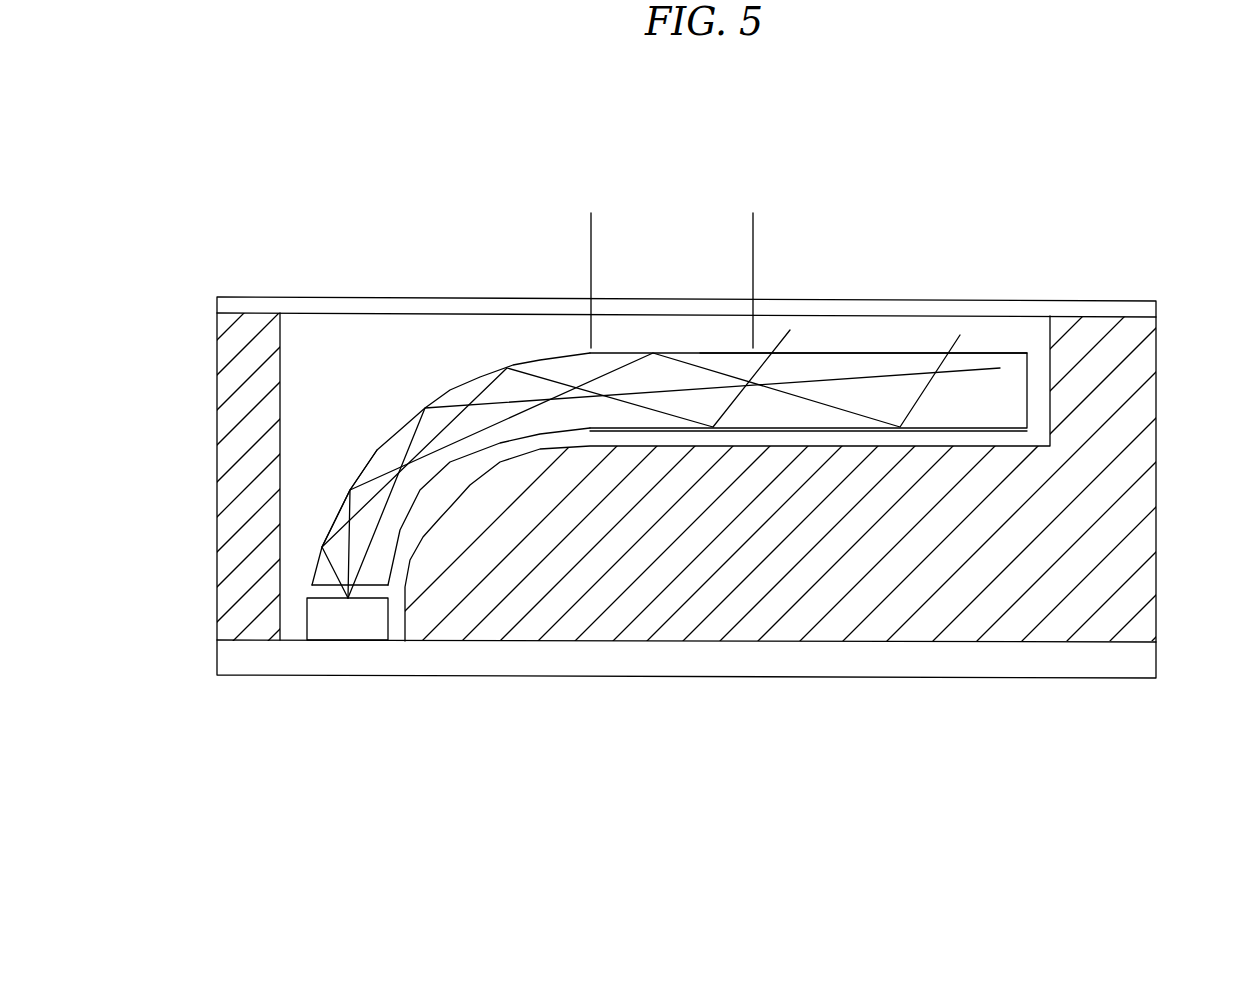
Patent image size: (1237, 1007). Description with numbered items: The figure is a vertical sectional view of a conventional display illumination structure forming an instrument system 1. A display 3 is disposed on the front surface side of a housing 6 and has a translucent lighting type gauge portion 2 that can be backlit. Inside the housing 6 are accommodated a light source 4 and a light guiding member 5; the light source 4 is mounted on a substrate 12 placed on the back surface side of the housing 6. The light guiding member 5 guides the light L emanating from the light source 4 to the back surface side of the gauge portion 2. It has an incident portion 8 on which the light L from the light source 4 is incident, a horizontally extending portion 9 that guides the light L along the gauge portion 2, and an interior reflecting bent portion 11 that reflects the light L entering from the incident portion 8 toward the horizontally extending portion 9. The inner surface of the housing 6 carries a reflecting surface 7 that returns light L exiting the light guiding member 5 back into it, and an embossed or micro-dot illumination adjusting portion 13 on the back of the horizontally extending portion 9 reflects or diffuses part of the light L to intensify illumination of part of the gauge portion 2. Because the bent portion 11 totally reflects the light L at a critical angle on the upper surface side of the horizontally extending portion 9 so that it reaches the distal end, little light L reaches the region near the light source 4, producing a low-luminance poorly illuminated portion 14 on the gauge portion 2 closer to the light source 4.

The instrument system 1 is at (1056, 190).
The gauge portion 2 is at (1028, 353).
The display 3 is at (1035, 292).
The light source 4 is at (305, 625).
The light guiding member 5 is at (401, 418).
The housing 6 is at (210, 392).
The reflecting surface 7 is at (993, 446).
The incident portion 8 is at (318, 588).
The horizontally extending portion 9 is at (985, 352).
The interior reflecting bent portion 11 is at (367, 461).
The substrate 12 is at (1140, 662).
The illumination adjusting portion 13 is at (945, 432).
The poorly illuminated portion 14 is at (591, 233).
The light L is at (492, 395).